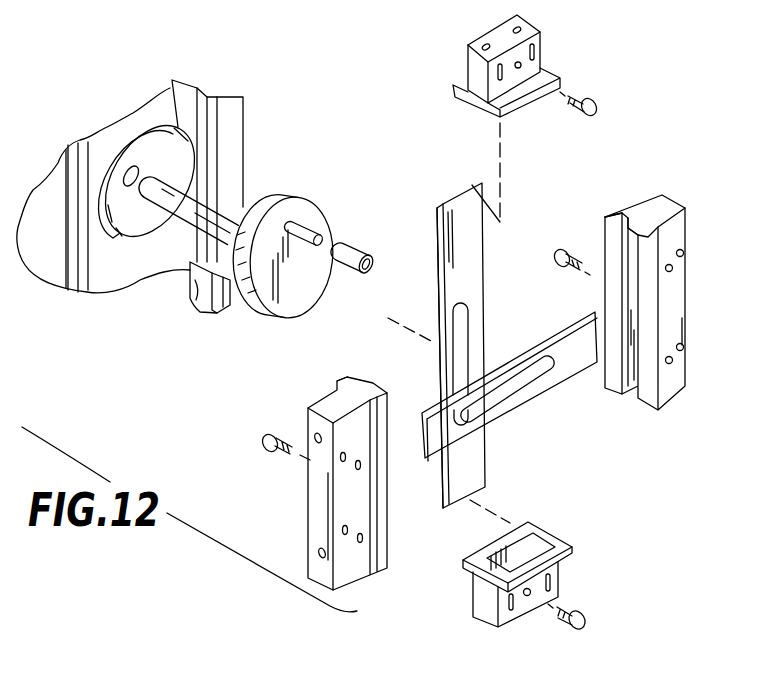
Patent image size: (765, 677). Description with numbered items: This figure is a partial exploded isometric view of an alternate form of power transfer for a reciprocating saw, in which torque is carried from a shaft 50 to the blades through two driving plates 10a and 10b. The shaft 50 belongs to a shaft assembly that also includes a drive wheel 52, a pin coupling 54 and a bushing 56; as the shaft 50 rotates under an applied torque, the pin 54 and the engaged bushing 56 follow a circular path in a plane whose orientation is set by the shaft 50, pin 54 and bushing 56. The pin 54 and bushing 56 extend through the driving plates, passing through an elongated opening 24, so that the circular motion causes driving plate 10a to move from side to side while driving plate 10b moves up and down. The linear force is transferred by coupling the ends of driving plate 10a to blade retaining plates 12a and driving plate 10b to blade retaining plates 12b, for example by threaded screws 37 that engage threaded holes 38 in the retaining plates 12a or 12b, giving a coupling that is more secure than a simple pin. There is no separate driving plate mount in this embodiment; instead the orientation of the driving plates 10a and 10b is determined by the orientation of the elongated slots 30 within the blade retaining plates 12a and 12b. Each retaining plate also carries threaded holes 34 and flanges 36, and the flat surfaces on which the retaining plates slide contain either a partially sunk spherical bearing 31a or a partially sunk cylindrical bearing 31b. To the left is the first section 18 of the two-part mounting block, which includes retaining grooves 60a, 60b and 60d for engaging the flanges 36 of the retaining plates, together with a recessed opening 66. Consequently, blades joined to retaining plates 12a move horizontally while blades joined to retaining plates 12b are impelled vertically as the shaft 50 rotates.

The driving plate 10a is at (465, 193).
The driving plate 10b is at (572, 362).
The blade retaining plate 12a is at (612, 562).
The blade retaining plate 12b is at (672, 212).
The first section of the mounting block 18 is at (105, 128).
The elongated opening 24 is at (525, 372).
The elongated opening 30 is at (640, 268).
The partially sunk spherical bearing 31a is at (673, 360).
The partially sunk cylindrical bearing 31b is at (535, 50).
The threaded holes 34 is at (322, 550).
The flanges 36 is at (655, 208).
The threaded screws 37 is at (558, 250).
The threaded holes 38 is at (522, 65).
The shaft 50 is at (222, 216).
The drive wheel 52 is at (292, 202).
The pin coupling 54 is at (326, 232).
The bushing 56 is at (350, 247).
The retaining groove 60a is at (216, 310).
The retaining groove 60b is at (78, 280).
The retaining groove 60d is at (188, 274).
The recessed opening 66 is at (172, 90).